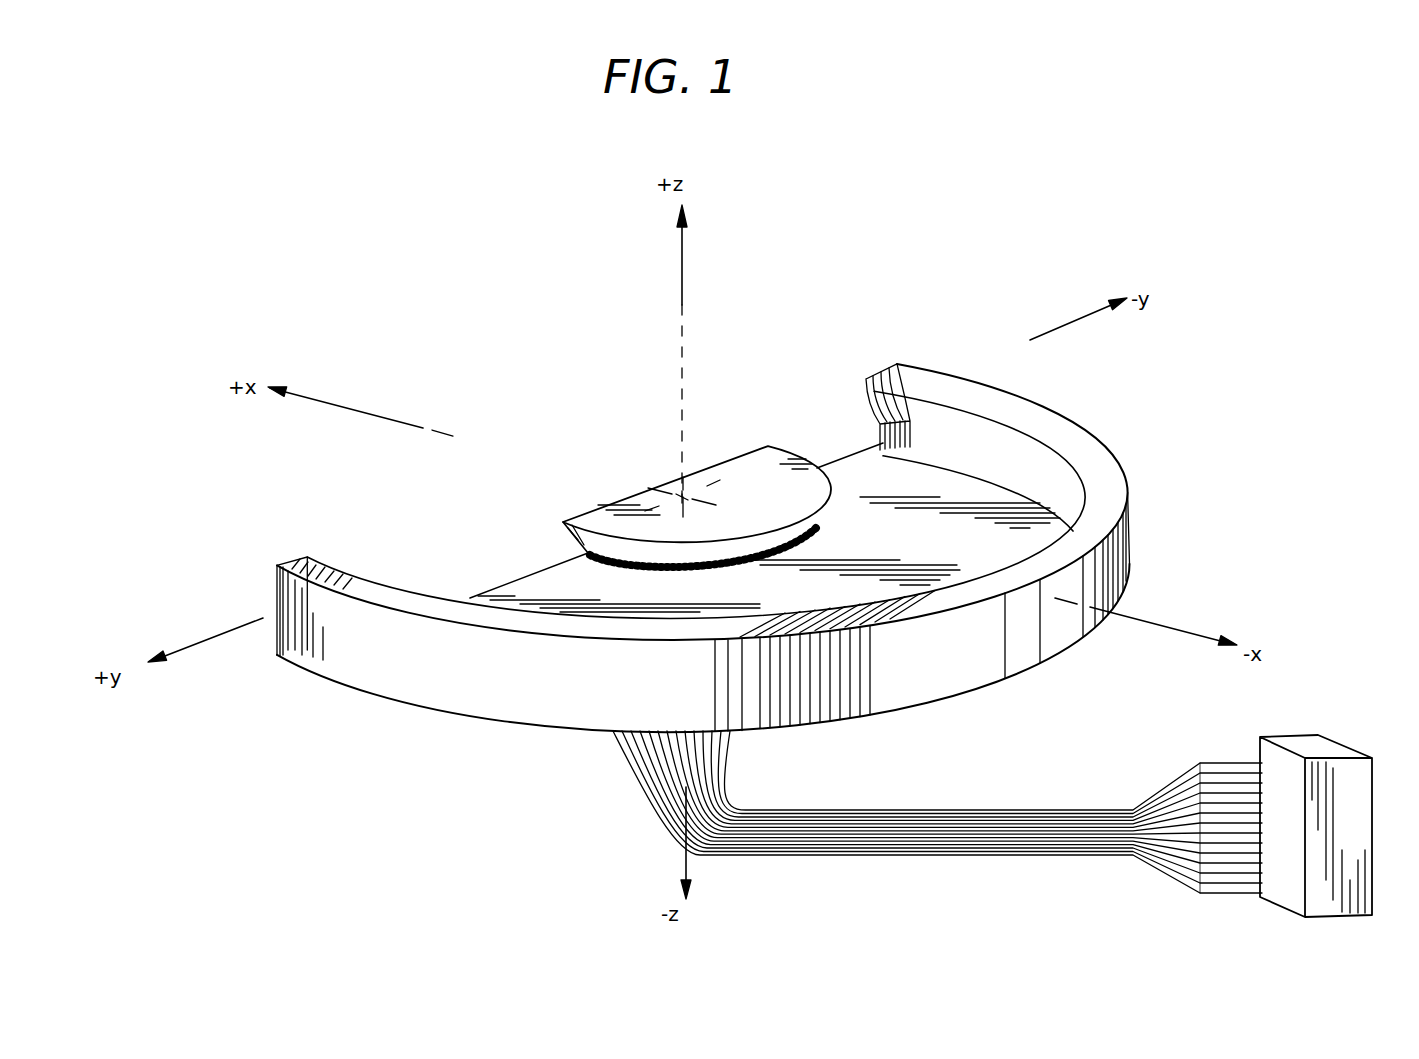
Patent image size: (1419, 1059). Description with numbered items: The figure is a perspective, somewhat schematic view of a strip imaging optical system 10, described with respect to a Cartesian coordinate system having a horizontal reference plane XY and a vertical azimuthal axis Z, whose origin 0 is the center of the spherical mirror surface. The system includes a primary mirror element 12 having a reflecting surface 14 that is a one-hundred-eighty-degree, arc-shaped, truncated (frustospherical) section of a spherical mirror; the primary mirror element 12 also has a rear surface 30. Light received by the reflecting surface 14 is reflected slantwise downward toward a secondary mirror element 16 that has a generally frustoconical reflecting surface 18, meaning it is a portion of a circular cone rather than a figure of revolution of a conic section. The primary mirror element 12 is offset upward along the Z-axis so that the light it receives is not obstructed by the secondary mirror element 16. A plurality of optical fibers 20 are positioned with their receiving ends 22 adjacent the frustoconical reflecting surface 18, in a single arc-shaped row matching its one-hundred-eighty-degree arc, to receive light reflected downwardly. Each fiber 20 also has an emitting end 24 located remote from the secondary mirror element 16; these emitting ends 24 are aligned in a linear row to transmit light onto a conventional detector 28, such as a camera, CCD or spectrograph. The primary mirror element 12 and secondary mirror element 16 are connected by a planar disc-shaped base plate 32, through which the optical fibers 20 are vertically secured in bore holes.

The origin 0 is at (680, 494).
The strip imaging optical system 10 is at (819, 612).
The primary mirror element 12 is at (958, 313).
The reflecting surface 14 is at (957, 413).
The secondary mirror element 16 is at (723, 466).
The frustoconical reflecting surface 18 is at (575, 541).
The optical fibers 20 is at (937, 825).
The receiving ends 22 is at (760, 553).
The emitting end 24 is at (1262, 762).
The detector 28 is at (1330, 748).
The rear surface 30 is at (1116, 560).
The base plate 32 is at (997, 497).